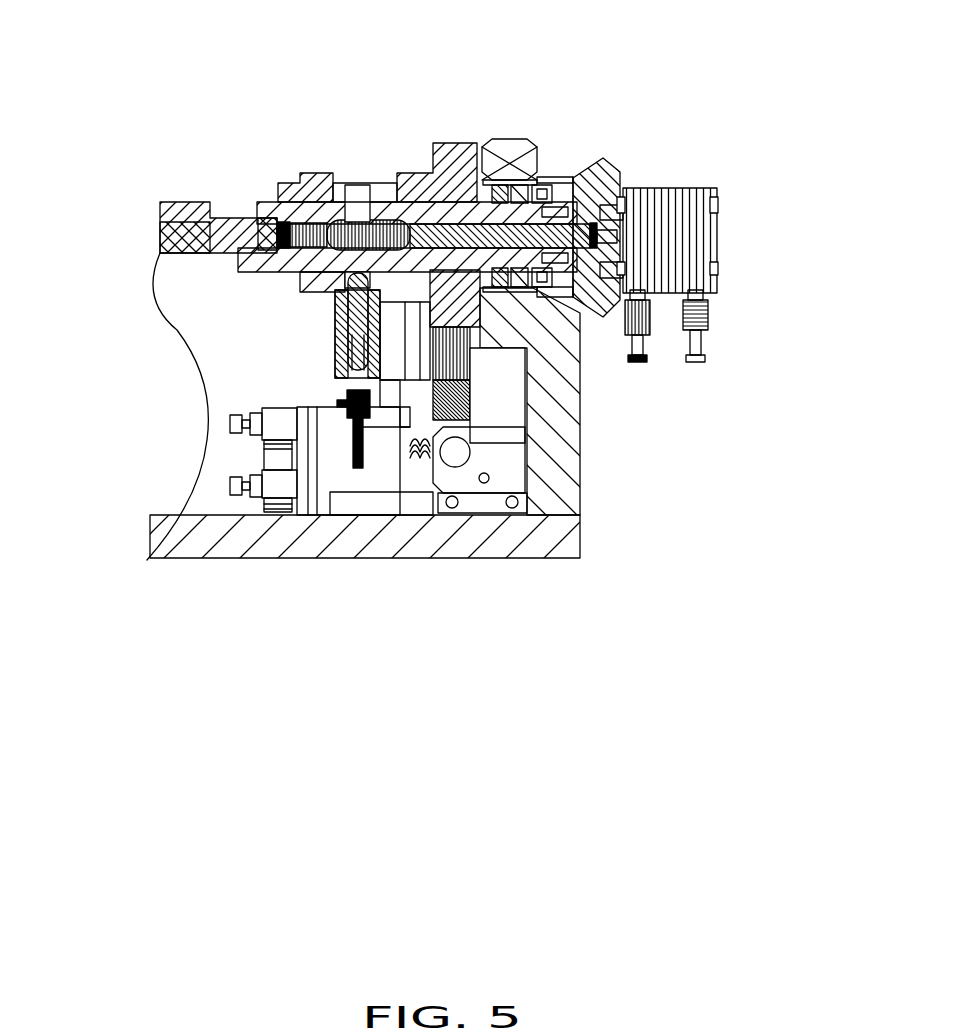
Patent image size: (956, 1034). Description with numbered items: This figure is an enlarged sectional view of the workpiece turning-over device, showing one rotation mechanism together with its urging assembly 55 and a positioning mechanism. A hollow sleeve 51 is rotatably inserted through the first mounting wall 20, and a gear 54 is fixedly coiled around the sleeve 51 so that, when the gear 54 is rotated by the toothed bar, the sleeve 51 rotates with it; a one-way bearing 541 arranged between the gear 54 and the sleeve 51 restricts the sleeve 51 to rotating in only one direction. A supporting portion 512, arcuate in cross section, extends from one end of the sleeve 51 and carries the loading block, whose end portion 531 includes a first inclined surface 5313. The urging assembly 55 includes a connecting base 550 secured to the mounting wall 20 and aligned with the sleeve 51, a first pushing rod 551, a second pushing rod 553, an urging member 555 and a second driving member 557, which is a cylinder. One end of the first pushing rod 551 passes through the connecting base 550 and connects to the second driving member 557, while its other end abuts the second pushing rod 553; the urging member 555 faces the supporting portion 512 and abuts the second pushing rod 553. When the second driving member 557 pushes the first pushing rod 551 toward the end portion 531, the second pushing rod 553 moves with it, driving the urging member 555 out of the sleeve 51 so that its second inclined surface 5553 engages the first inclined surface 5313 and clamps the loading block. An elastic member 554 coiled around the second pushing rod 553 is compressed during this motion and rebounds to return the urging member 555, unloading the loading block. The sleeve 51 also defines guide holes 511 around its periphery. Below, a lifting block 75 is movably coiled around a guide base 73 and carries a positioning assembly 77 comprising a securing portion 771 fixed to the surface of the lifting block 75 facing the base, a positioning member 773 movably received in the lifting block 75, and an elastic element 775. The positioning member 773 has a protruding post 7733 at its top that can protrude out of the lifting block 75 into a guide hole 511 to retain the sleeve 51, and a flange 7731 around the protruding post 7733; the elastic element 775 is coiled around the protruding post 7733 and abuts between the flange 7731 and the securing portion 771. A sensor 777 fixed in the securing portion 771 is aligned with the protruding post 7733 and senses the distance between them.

The first mounting wall 20 is at (560, 376).
The hollow sleeve 51 is at (582, 225).
The gear 54 is at (465, 143).
The urging assembly 55 is at (710, 251).
The guide base 73 is at (378, 500).
The lifting block 75 is at (338, 340).
The positioning assembly 77 is at (321, 455).
The guide hole 511 is at (358, 187).
The supporting portion 512 is at (245, 262).
The end portion 531 is at (250, 266).
The one-way bearing 541 is at (510, 143).
The connecting base 550 is at (610, 300).
The first pushing rod 551 is at (617, 210).
The second pushing rod 553 is at (387, 205).
The elastic member 554 is at (283, 183).
The urging member 555 is at (275, 202).
The second driving member 557 is at (682, 238).
The securing portion 771 is at (370, 420).
The positioning member 773 is at (609, 391).
The elastic element 775 is at (340, 350).
The sensor 777 is at (363, 428).
The first inclined surface 5313 is at (255, 232).
The second inclined surface 5553 is at (267, 213).
The flange 7731 is at (490, 393).
The protruding post 7733 is at (478, 350).